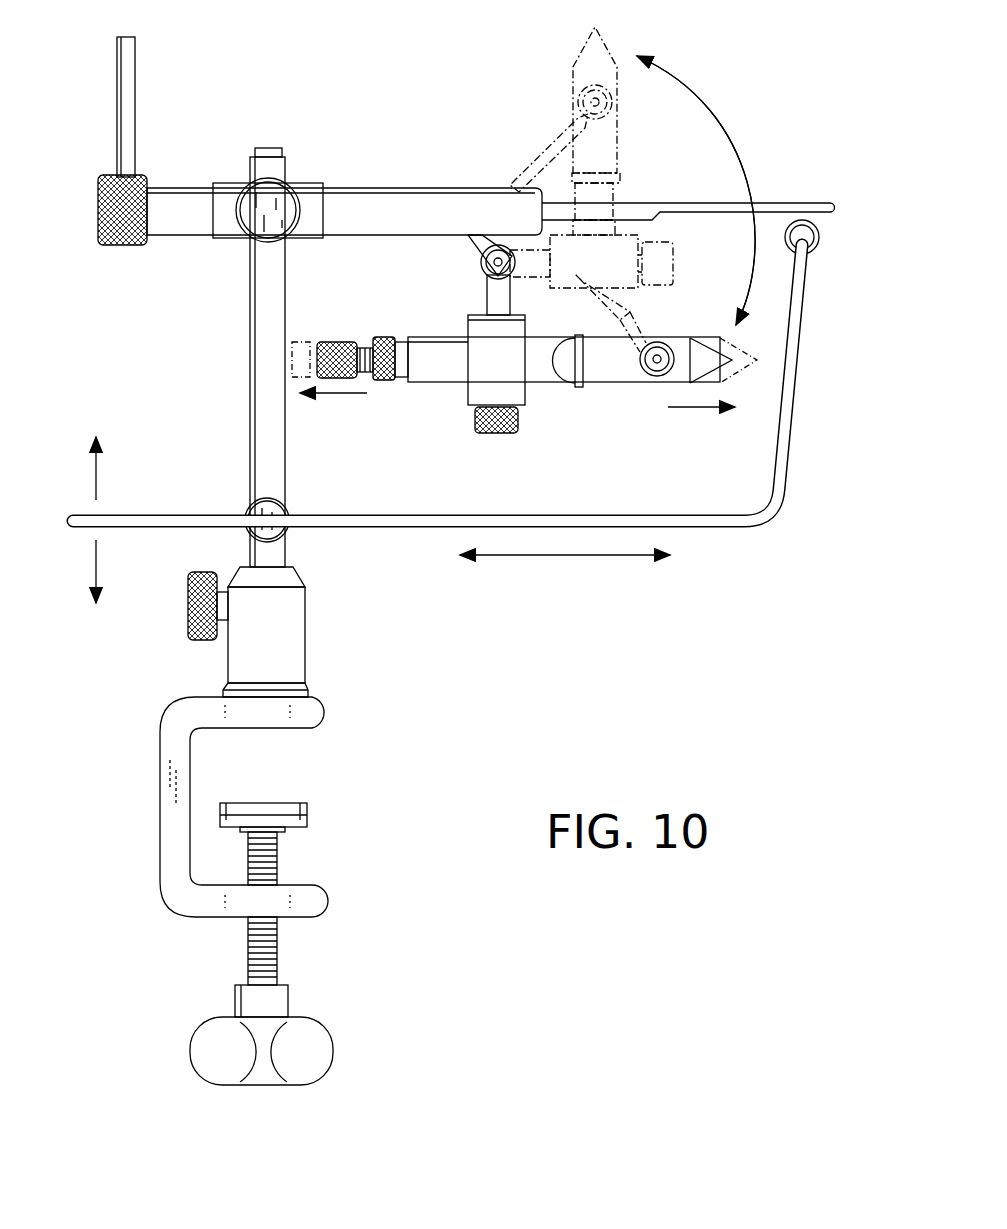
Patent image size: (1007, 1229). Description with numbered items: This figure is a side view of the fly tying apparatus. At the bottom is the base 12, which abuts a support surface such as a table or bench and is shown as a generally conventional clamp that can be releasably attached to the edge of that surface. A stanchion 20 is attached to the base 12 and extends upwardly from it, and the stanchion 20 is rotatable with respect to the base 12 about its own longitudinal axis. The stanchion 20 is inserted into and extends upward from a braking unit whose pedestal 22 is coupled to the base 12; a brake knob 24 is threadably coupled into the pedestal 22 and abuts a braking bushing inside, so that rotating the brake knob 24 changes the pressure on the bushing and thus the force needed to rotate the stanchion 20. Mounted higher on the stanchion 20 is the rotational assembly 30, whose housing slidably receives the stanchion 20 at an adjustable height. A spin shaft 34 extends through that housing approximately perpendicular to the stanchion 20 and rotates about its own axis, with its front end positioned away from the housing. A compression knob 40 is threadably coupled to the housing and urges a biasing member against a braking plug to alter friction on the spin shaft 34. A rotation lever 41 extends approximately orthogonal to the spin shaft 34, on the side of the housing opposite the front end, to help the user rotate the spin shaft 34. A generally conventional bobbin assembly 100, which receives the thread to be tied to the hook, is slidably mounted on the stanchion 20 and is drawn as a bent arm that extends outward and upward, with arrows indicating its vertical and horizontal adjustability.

The base 12 is at (183, 937).
The stanchion 20 is at (250, 366).
The pedestal 22 is at (305, 630).
The brake knob 24 is at (188, 610).
The rotational assembly 30 is at (358, 160).
The spin shaft 34 is at (178, 190).
The compression knob 40 is at (268, 225).
The rotation lever 41 is at (117, 92).
The bobbin assembly 100 is at (795, 482).